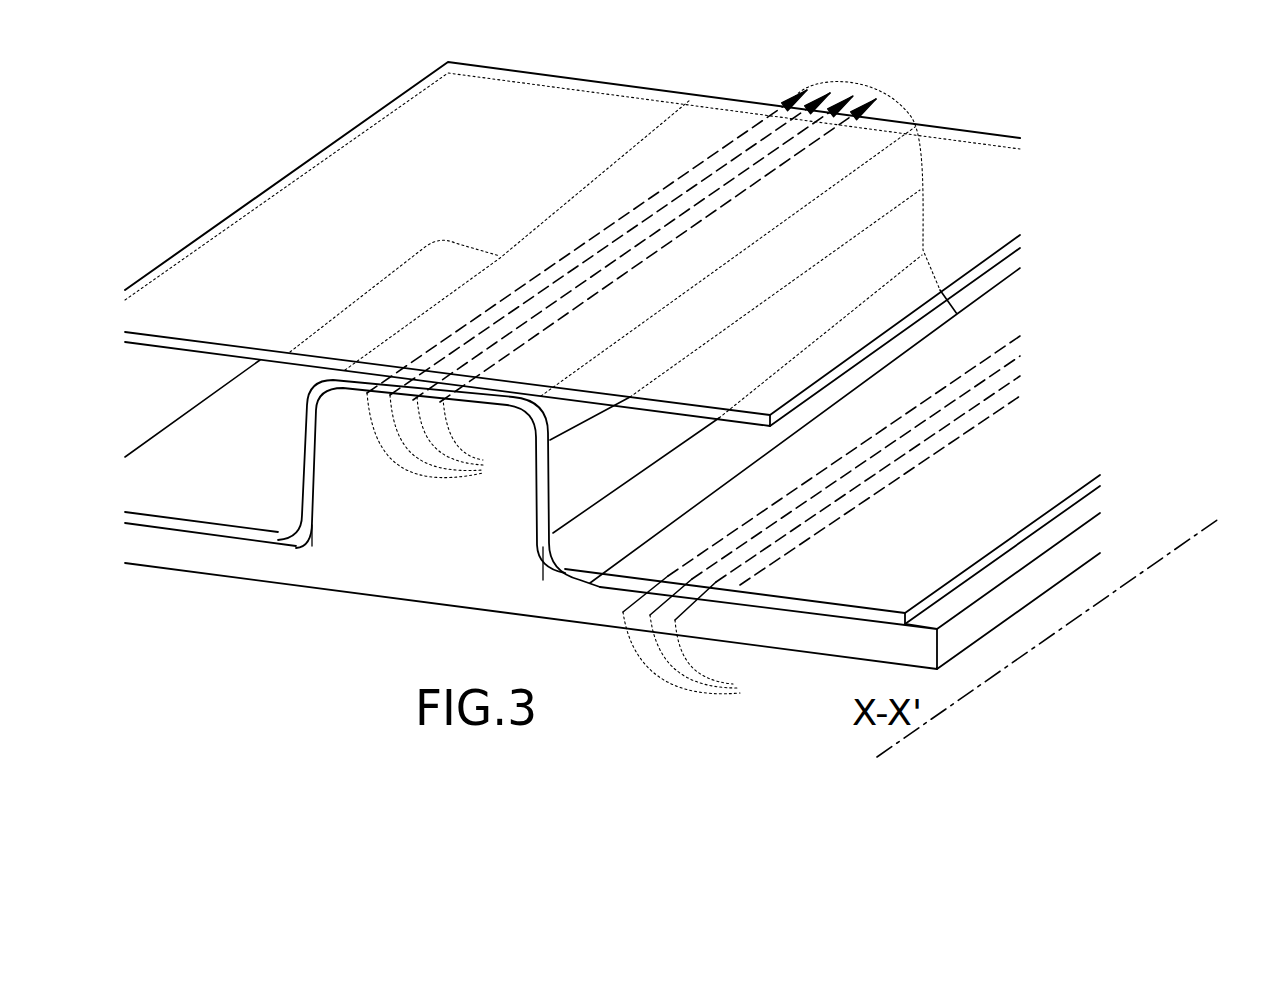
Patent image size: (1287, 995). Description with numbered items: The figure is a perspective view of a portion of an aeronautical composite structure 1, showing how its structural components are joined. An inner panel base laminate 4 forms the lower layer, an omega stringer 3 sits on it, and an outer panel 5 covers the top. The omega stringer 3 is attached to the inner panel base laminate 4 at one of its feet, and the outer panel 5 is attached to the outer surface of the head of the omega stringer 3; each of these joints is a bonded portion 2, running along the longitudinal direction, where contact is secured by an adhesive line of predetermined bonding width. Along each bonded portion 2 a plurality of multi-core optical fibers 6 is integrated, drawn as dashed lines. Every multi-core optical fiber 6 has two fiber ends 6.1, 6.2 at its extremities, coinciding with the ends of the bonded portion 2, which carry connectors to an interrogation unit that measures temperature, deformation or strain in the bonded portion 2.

The aeronautical composite structure 1 is at (212, 72).
The bonded portion 2 is at (768, 225).
The omega stringer 3 is at (304, 440).
The inner panel base laminate 4 is at (236, 576).
The outer panel 5 is at (311, 190).
The multi-core optical fiber 6 is at (633, 203).
The fiber end 6.1 is at (581, 553).
The fiber end 6.2 is at (887, 90).